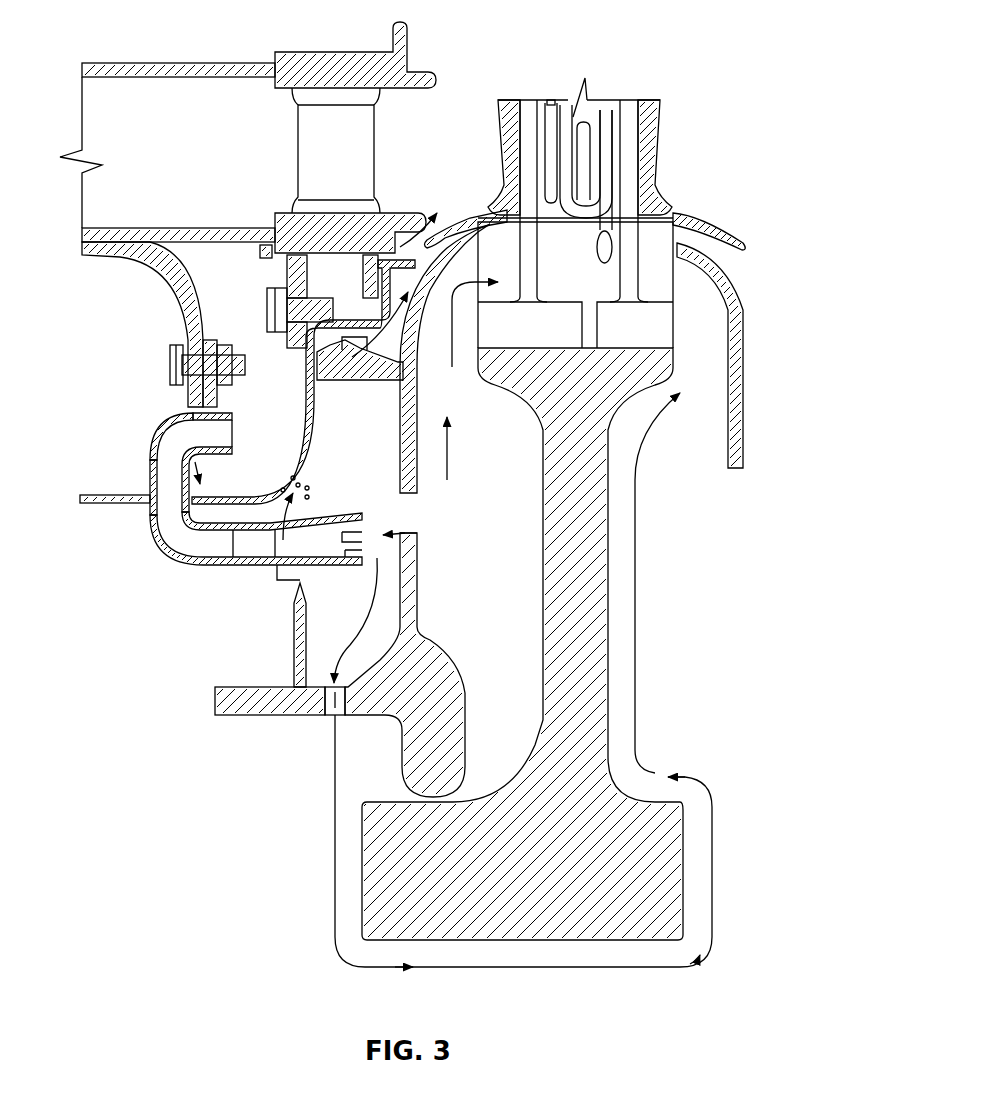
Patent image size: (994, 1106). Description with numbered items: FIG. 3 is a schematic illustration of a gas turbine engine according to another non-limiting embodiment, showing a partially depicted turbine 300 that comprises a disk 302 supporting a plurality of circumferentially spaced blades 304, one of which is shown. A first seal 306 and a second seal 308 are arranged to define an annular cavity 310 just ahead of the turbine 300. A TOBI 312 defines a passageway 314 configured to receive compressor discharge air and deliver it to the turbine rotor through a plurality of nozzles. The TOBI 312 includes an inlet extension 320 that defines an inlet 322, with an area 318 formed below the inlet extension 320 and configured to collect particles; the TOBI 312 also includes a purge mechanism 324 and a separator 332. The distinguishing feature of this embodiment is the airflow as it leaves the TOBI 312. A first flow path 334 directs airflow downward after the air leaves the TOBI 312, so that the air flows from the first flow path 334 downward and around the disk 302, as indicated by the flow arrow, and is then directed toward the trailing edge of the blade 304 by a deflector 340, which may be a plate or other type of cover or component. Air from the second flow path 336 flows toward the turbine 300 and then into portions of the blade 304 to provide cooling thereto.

The turbine 300 is at (682, 53).
The disk 302 is at (588, 698).
The blade 304 is at (652, 130).
The first seal 306 is at (296, 640).
The second seal 308 is at (268, 322).
The annular cavity 310 is at (327, 453).
The TOBI 312 is at (203, 567).
The passageway 314 is at (170, 523).
The area 318 is at (183, 450).
The inlet extension 320 is at (167, 427).
The inlet 322 is at (230, 417).
The purge mechanism 324 is at (273, 527).
The separator 332 is at (342, 527).
The first flow path 334 is at (347, 550).
The second flow path 336 is at (362, 515).
The deflector 340 is at (747, 367).